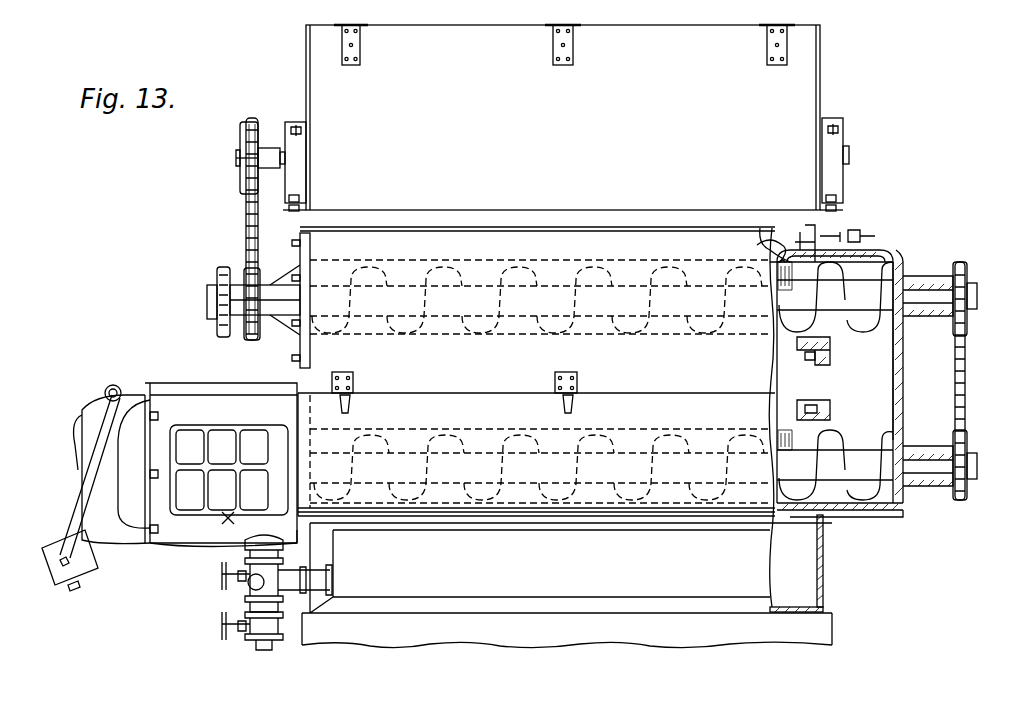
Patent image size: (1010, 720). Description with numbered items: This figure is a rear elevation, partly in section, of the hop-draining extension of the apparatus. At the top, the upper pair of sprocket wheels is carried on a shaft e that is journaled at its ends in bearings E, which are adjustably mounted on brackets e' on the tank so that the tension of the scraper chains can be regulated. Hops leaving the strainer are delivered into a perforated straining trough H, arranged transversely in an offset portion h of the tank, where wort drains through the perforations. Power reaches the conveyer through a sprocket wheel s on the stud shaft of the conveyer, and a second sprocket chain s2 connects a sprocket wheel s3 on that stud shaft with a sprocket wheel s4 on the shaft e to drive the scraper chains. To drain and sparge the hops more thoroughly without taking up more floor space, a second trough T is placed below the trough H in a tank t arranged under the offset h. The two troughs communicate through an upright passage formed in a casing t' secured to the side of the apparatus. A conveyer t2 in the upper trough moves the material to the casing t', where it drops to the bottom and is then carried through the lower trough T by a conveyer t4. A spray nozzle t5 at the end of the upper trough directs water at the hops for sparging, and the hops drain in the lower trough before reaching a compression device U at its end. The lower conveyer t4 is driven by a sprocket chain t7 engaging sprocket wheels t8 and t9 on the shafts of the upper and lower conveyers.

The sprocket wheel s4 is at (242, 141).
The shaft e is at (260, 134).
The bracket e' is at (562, 166).
The bearing E is at (848, 150).
The spray nozzle t5 is at (783, 228).
The sprocket wheel t8 is at (963, 262).
The second sprocket chain s2 is at (246, 236).
The perforated straining trough H is at (790, 276).
The conveyer t2 is at (835, 296).
The sprocket chain t7 is at (966, 380).
The sprocket wheel s is at (220, 330).
The sprocket wheel s3 is at (252, 340).
The offset portion h is at (533, 299).
The casing t' is at (840, 371).
The second trough T is at (783, 424).
The conveyer t4 is at (835, 465).
The compression device U is at (167, 487).
The sprocket wheel t9 is at (963, 495).
The valve cock n is at (222, 520).
The tank t is at (796, 420).